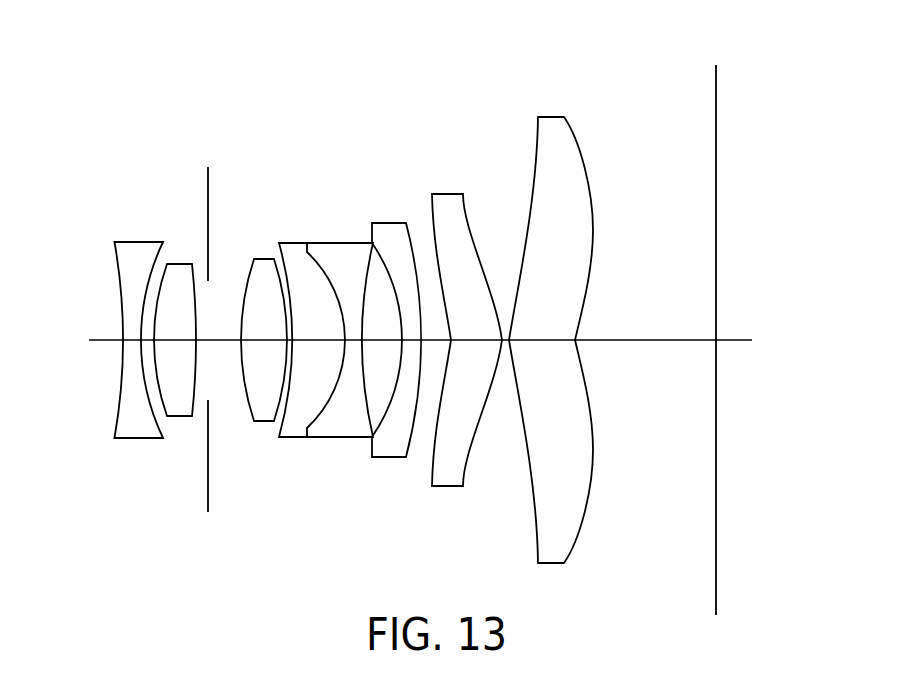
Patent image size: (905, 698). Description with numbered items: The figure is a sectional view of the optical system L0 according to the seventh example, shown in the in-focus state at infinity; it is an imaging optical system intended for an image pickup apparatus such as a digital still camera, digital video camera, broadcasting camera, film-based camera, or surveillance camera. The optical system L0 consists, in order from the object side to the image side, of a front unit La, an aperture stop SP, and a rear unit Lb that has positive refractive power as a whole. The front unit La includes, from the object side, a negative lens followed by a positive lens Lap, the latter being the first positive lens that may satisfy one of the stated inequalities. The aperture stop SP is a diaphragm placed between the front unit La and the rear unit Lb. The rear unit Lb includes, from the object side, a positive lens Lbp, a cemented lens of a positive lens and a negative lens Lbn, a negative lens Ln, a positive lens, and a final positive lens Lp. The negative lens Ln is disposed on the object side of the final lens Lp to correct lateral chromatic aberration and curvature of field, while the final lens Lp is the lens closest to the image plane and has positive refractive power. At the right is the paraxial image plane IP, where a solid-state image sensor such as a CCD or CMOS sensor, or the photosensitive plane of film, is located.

The optical system L0 is at (610, 58).
The front unit La is at (189, 113).
The rear unit Lb is at (592, 113).
The positive lens Lap is at (178, 413).
The positive lens Lbp is at (263, 423).
The negative lens Lbn is at (342, 438).
The negative lens Ln is at (385, 457).
The final lens Lp is at (538, 562).
The aperture stop SP is at (208, 180).
The image plane IP is at (716, 82).